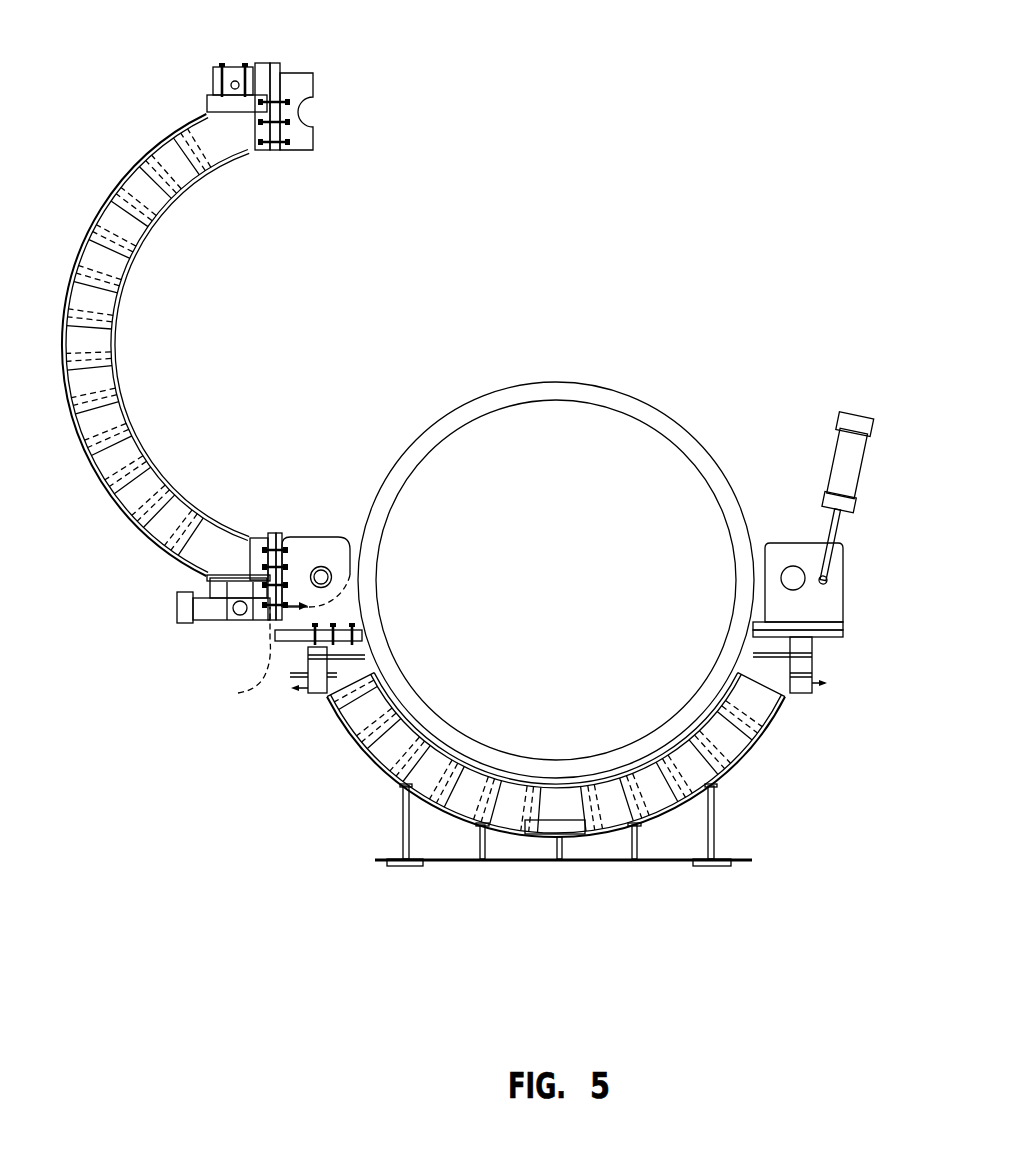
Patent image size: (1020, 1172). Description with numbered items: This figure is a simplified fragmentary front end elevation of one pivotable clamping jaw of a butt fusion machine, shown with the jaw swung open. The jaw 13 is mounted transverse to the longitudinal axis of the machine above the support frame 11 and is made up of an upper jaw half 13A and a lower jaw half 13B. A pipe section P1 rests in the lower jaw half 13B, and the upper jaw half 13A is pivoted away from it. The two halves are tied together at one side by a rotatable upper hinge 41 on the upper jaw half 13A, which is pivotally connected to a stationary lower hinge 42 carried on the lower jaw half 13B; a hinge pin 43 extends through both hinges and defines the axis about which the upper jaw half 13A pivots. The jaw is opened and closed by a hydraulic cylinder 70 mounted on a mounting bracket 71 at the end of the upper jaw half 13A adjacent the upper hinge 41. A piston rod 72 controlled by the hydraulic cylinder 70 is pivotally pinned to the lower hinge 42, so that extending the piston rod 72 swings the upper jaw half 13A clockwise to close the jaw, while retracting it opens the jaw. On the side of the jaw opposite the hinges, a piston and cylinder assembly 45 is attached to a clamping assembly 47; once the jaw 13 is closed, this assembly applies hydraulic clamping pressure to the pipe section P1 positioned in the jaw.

The support frame 11 is at (712, 820).
The jaw 13 is at (94, 172).
The upper jaw half 13A is at (190, 108).
The lower jaw half 13B is at (742, 725).
The pipe section P1 is at (612, 400).
The upper hinge 41 is at (293, 537).
The lower hinge 42 is at (300, 613).
The hinge pin 43 is at (322, 575).
The piston and cylinder assembly 45 is at (840, 457).
The clamping assembly 47 is at (822, 602).
The hydraulic cylinder 70 is at (203, 618).
The mounting bracket 71 is at (267, 620).
The piston rod 72 is at (237, 656).